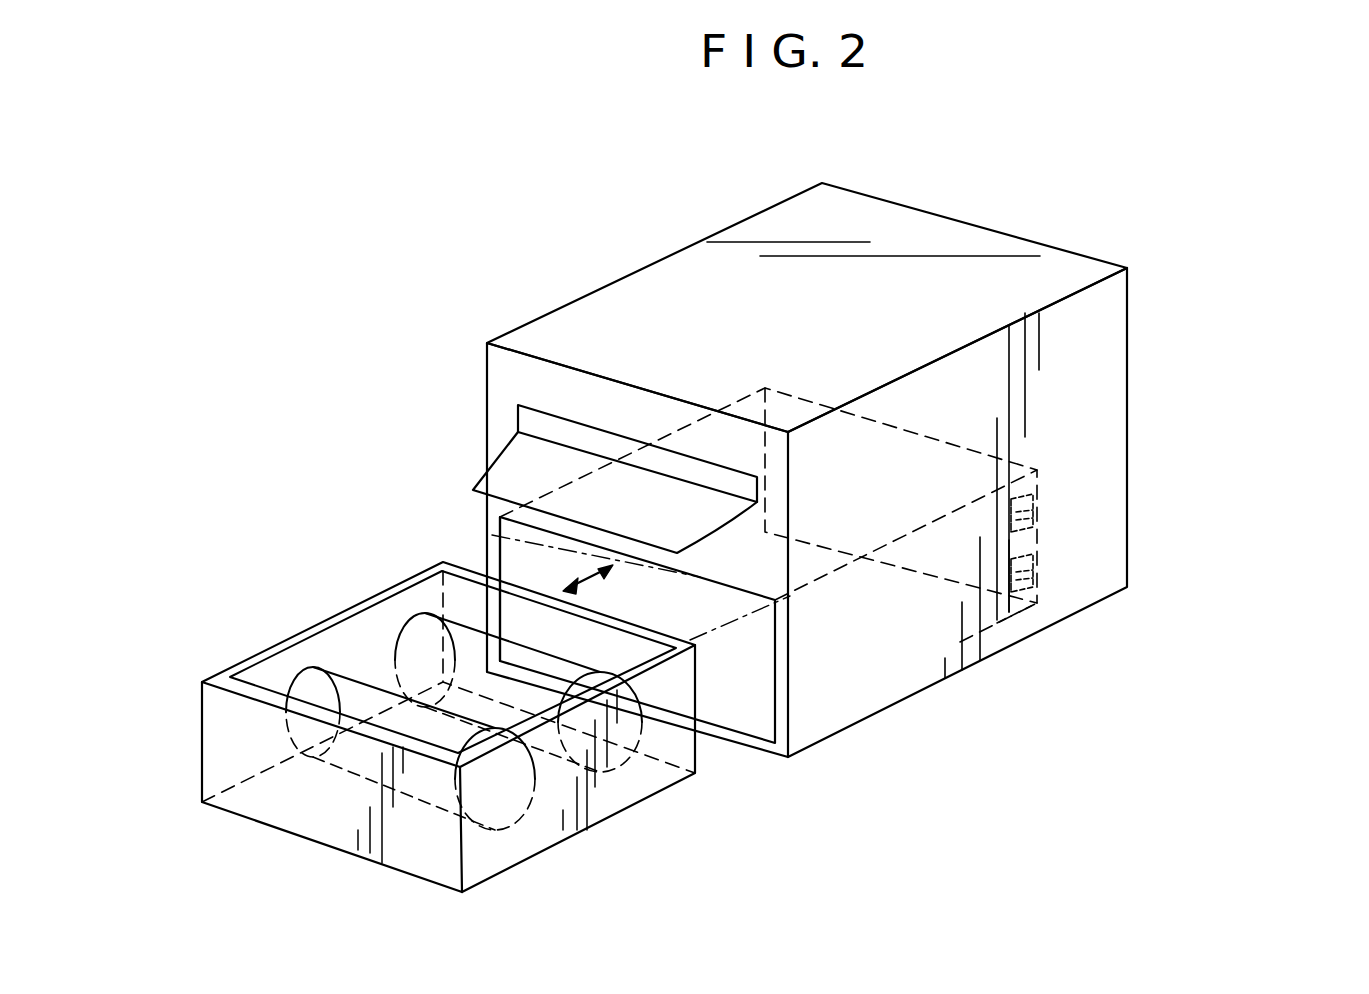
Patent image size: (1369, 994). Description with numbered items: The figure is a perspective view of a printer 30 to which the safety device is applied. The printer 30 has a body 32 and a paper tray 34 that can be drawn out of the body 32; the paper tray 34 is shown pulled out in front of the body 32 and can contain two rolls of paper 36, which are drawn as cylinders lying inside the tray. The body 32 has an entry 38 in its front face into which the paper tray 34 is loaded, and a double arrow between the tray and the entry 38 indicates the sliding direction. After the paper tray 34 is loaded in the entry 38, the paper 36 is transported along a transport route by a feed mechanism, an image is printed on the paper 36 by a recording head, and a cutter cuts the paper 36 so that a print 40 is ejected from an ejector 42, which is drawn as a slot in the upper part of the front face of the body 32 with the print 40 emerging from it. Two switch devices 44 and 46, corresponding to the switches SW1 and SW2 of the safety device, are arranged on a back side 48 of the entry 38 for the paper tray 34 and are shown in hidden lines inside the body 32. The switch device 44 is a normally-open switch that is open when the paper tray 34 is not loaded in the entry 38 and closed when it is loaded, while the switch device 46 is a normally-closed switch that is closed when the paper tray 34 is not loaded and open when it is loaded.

The printer 30 is at (628, 262).
The body 32 is at (1100, 416).
The paper tray 34 is at (208, 715).
The rolls of paper 36 is at (417, 648).
The entry 38 is at (779, 690).
The print 40 is at (490, 457).
The ejector 42 is at (536, 413).
The switch device 44 is at (1037, 528).
The switch device 46 is at (1040, 577).
The back side 48 is at (993, 572).